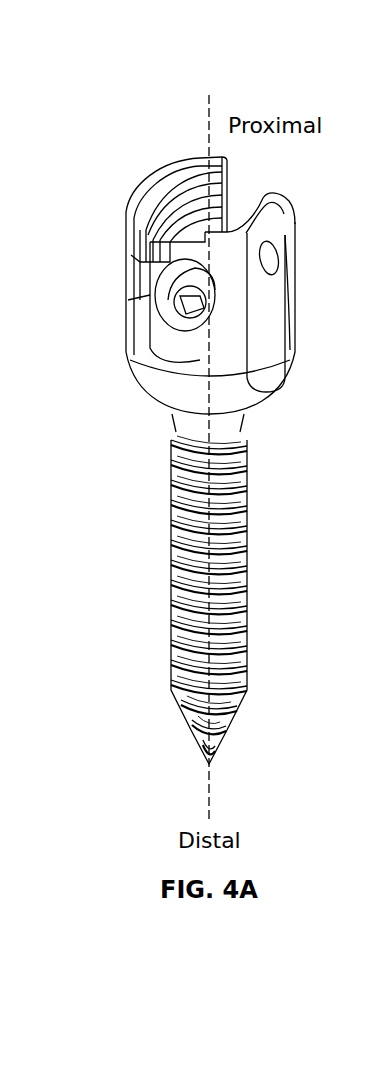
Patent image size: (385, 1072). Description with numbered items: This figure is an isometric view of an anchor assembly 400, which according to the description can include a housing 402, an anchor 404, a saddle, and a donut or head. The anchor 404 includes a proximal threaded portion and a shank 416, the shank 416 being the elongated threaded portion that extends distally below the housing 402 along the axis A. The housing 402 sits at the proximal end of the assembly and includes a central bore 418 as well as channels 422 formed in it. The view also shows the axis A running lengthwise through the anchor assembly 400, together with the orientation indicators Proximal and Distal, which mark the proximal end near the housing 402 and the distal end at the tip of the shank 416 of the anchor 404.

The anchor assembly 400 is at (128, 140).
The housing 402 is at (258, 176).
The anchor 404 is at (148, 591).
The shank 416 is at (249, 528).
The central bore 418 is at (183, 160).
The channels 422 is at (131, 255).
The axis A is at (212, 777).